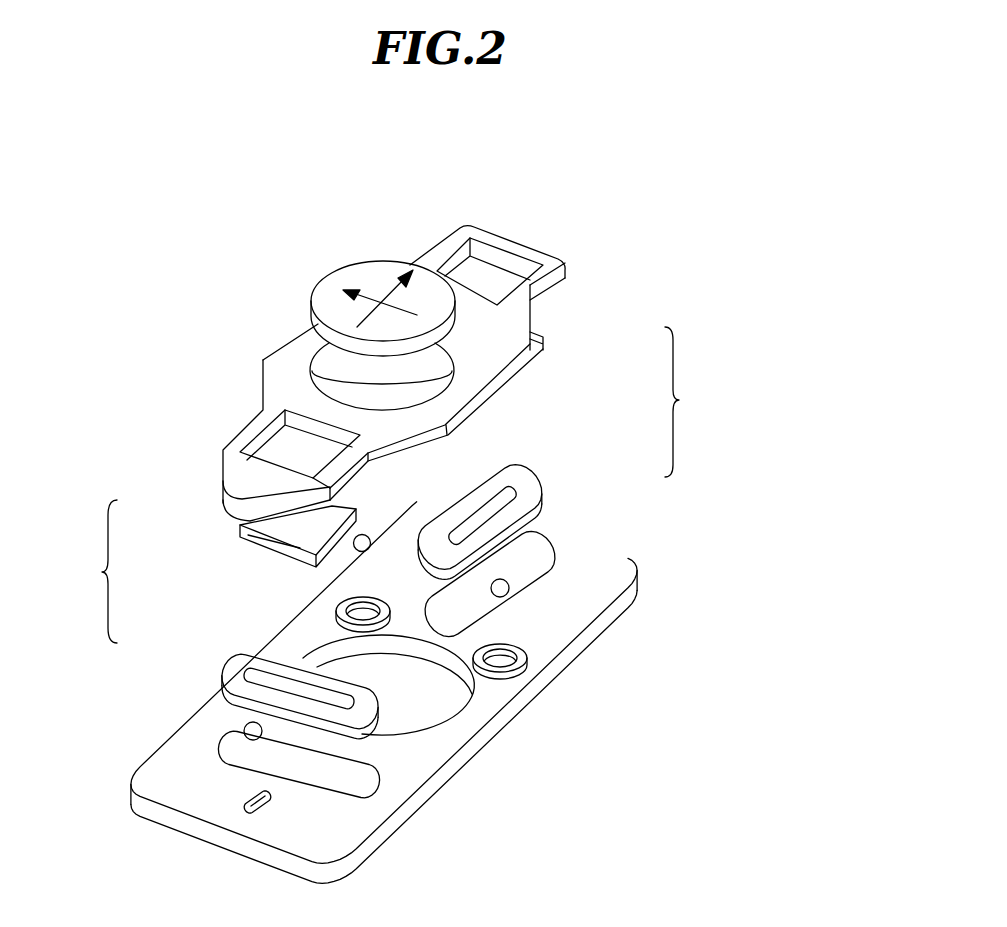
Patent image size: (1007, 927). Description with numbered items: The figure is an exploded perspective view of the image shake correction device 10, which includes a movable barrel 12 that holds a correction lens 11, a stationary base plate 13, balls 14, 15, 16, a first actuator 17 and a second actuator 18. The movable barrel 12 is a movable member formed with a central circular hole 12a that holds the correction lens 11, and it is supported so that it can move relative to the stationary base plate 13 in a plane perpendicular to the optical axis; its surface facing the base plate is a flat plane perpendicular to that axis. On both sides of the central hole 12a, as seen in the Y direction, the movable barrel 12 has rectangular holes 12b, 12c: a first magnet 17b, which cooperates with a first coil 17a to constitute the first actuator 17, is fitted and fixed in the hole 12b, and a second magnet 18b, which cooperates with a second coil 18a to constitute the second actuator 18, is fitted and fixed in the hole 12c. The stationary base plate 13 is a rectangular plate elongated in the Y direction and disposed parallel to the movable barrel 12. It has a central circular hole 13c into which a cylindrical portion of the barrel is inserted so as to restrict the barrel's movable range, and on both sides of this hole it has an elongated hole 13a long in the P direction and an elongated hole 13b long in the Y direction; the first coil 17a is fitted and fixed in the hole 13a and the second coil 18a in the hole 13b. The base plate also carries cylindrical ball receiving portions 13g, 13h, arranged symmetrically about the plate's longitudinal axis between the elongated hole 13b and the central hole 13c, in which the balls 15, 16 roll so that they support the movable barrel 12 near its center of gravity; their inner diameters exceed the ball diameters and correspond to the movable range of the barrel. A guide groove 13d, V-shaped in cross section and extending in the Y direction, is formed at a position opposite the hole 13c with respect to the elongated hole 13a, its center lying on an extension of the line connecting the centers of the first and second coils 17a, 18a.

The image shake correction device 10 is at (743, 535).
The correction lens 11 is at (357, 277).
The movable barrel 12 is at (288, 353).
The central circular hole 12a is at (433, 377).
The rectangular hole 12b is at (285, 438).
The rectangular hole 12c is at (483, 270).
The stationary base plate 13 is at (452, 765).
The elongated hole 13a is at (345, 783).
The elongated hole 13b is at (530, 563).
The central circular hole 13c is at (445, 708).
The guide groove 13d is at (247, 803).
The ball receiving portion 13g is at (358, 610).
The ball receiving portion 13h is at (497, 660).
The ball 14 is at (250, 726).
The ball 15 is at (353, 538).
The ball 16 is at (510, 588).
The first actuator 17 is at (90, 571).
The first coil 17a is at (245, 665).
The first magnet 17b is at (297, 538).
The second actuator 18 is at (691, 402).
The second coil 18a is at (540, 480).
The second magnet 18b is at (533, 333).